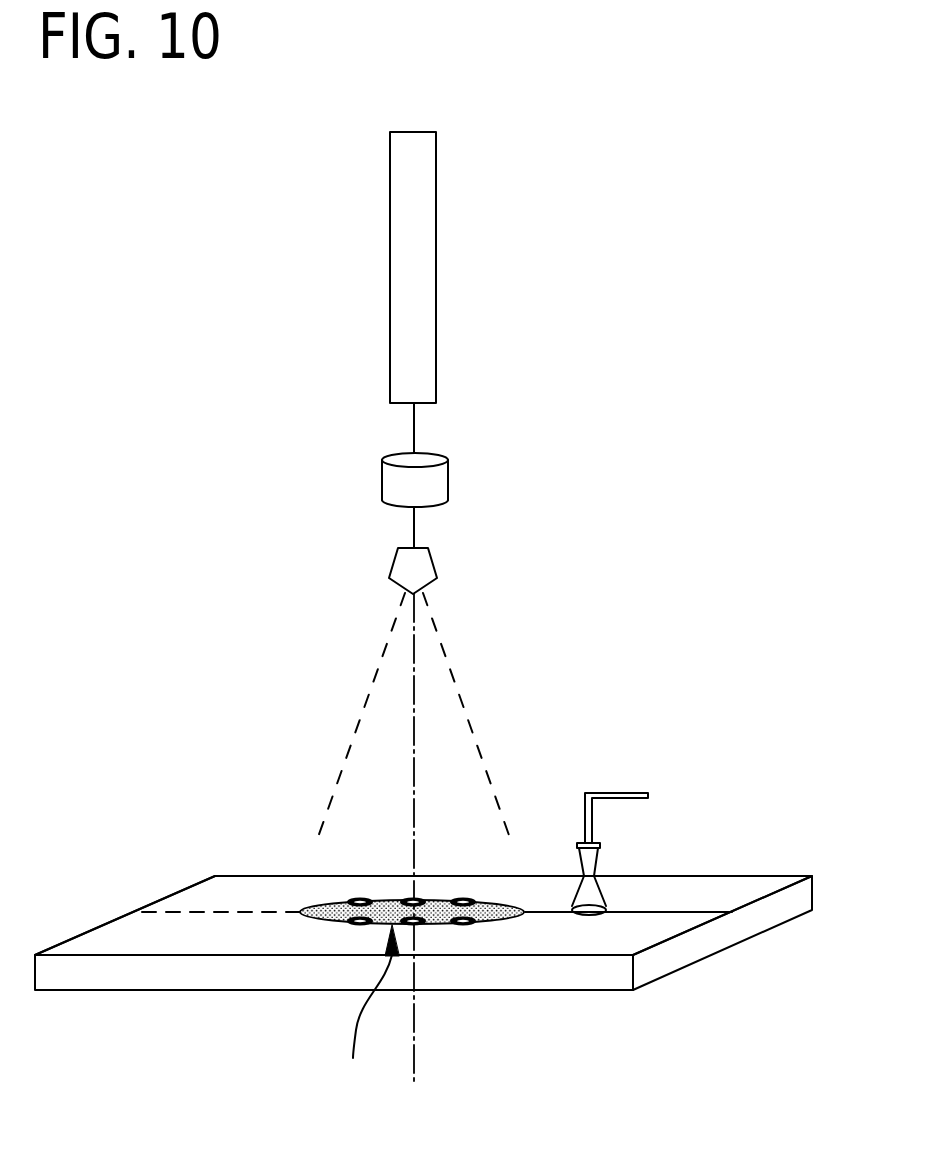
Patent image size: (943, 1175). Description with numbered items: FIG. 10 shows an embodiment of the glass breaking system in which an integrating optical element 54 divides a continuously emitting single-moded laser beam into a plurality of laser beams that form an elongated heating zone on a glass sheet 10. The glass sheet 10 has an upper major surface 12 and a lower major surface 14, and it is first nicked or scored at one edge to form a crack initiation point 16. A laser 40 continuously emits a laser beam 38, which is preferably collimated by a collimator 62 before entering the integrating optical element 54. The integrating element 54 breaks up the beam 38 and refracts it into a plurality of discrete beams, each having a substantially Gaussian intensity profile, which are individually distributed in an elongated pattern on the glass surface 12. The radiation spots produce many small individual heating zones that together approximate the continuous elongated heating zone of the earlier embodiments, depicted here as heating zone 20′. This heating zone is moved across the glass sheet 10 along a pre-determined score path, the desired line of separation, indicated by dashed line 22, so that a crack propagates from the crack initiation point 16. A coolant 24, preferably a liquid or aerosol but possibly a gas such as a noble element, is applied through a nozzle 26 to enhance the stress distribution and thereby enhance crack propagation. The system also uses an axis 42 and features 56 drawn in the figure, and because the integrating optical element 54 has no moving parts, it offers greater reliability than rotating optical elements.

The glass sheet 10 is at (814, 893).
The upper major surface 12 is at (143, 945).
The lower major surface 14 is at (540, 990).
The crack initiation point 16 is at (733, 913).
The heating zone 20′ is at (370, 1011).
The dashed line 22 is at (257, 912).
The coolant 24 is at (603, 897).
The nozzle 26 is at (576, 858).
The laser beam 38 is at (414, 412).
The laser 40 is at (436, 335).
The optical axis 42 is at (414, 1053).
The integrating optical element 54 is at (392, 564).
The contaminant particles 56 is at (353, 898).
The collimator 62 is at (448, 475).